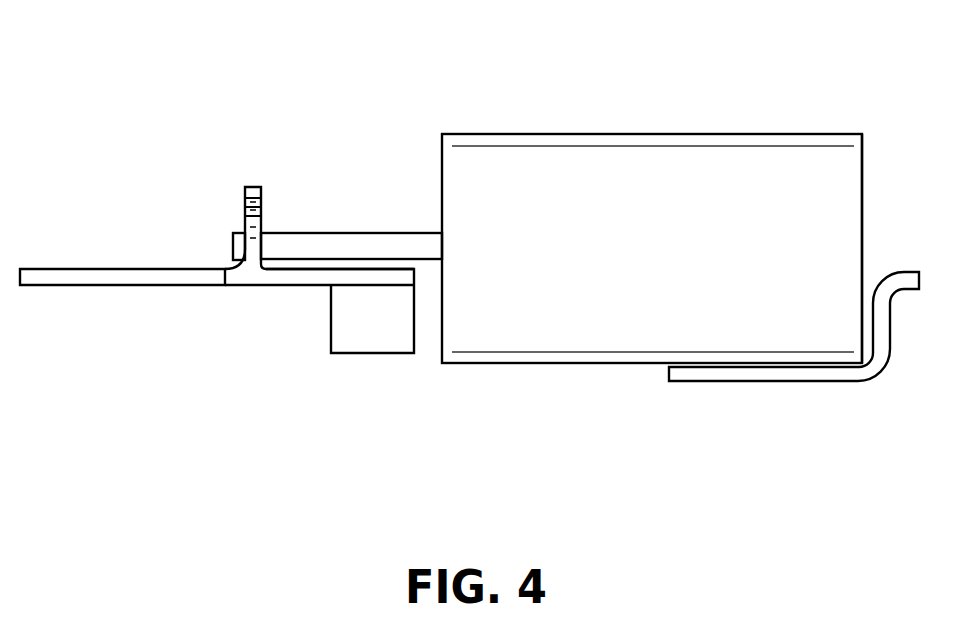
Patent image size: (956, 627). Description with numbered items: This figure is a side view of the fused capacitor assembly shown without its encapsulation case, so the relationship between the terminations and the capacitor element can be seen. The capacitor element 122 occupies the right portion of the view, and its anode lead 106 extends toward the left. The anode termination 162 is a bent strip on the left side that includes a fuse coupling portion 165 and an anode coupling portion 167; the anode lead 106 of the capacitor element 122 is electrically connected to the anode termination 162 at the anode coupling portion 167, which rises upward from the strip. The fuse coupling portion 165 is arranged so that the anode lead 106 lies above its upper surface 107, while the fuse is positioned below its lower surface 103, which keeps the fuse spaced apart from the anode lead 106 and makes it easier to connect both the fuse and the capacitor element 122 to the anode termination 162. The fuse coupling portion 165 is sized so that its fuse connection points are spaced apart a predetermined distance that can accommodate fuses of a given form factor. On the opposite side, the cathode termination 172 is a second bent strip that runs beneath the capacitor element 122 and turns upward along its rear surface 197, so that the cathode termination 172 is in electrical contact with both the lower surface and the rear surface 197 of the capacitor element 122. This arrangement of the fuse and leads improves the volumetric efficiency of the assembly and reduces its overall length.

The lower surface 103 is at (374, 285).
The anode lead 106 is at (391, 233).
The upper surface 107 is at (326, 270).
The capacitor element 122 is at (661, 170).
The anode termination 162 is at (88, 298).
The fuse coupling portion 165 is at (300, 285).
The anode coupling portion 167 is at (253, 172).
The cathode termination 172 is at (857, 390).
The rear surface 197 is at (863, 212).